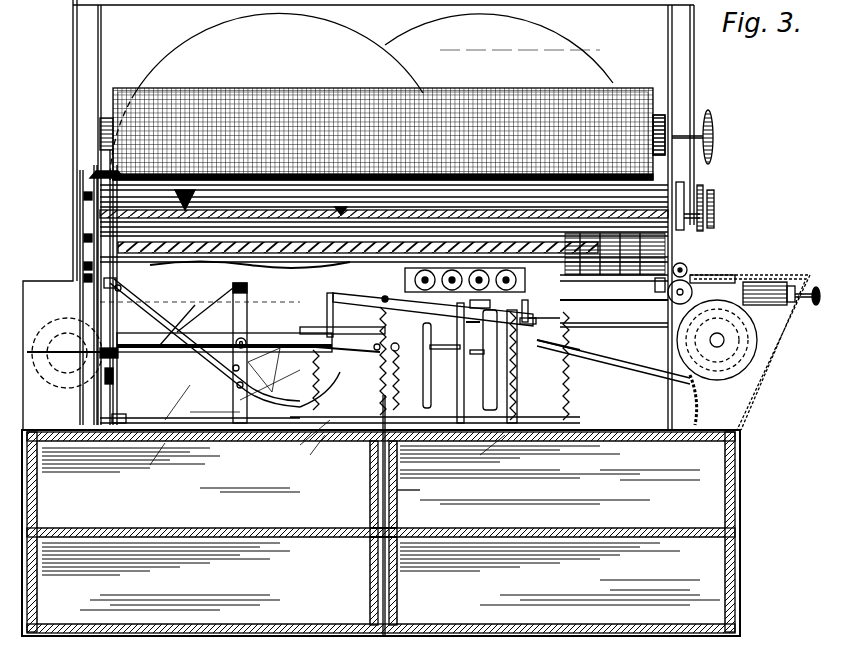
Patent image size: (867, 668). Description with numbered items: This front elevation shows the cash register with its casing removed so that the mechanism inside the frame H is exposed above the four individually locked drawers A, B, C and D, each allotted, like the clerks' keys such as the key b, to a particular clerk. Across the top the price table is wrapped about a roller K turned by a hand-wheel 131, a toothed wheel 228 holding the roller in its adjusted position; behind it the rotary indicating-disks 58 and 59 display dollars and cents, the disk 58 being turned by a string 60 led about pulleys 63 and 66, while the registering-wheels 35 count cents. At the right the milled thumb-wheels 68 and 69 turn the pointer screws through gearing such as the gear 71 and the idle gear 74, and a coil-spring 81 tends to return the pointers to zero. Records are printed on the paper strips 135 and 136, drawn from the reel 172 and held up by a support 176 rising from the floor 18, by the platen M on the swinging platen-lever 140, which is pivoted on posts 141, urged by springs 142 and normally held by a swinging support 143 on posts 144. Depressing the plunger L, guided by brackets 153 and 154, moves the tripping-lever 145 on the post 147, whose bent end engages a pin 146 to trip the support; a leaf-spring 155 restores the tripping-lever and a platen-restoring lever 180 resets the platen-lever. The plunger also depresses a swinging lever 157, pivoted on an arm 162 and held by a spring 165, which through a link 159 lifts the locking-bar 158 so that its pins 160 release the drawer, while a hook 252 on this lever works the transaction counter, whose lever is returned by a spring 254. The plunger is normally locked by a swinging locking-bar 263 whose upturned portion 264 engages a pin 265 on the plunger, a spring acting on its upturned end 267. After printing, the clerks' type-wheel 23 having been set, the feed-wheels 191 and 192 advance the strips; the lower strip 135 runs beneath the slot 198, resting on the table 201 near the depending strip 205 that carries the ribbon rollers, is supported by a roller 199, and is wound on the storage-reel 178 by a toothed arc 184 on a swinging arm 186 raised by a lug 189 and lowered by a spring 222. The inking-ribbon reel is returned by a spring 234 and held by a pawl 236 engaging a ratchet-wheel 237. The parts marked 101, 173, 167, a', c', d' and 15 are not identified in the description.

The rotary indicating-disk 58 is at (173, 48).
The rotary indicating-disk 59 is at (398, 38).
The frame H is at (531, 37).
The roller K is at (285, 88).
The lower feed-wheel 192 is at (704, 295).
The toothed wheel 228 is at (660, 115).
The hand-wheel 131 is at (711, 112).
The registering-wheels 35 is at (384, 245).
The clerks' type-wheel 23 is at (480, 280).
The string 60 is at (614, 280).
The bracket 101 is at (665, 285).
The printing-platen M is at (580, 314).
The idle gear 74 is at (684, 190).
The coil-spring 81 is at (703, 200).
The milled thumb-wheel 69 is at (714, 205).
The gear 71 is at (715, 222).
The milled thumb-wheel 68 is at (686, 268).
The upper feed-wheel 191 is at (745, 275).
The table 201 is at (737, 275).
The slot 198 is at (770, 282).
The depending strip 205 is at (795, 286).
The roller 199 is at (812, 287).
The storage-reel 178 is at (745, 330).
The toothed arc 184 is at (698, 400).
The swinging arm 186 is at (632, 368).
The pawl 236 is at (565, 350).
The spring 222 is at (579, 366).
The lug 189 is at (530, 330).
The plunger L is at (90, 176).
The pulley 66 is at (84, 196).
The pulley 63 is at (84, 237).
The upper bracket 154 is at (84, 265).
The reel 172 is at (84, 277).
The wheel housing 173 is at (34, 318).
The bracket 153 is at (102, 358).
The pin 265 is at (108, 384).
The upturned portion 264 is at (114, 420).
The lever 167 is at (125, 290).
The lower paper strip 135 is at (212, 307).
The upper paper strip 136 is at (190, 330).
The support 176 is at (247, 305).
The swinging lever 157 is at (262, 343).
The platen-restoring lever 180 is at (170, 353).
The leaf-spring 155 is at (232, 390).
The arm 162 is at (258, 370).
The tripping-lever 145 is at (172, 403).
The post 147 is at (212, 412).
The swinging support 143 is at (327, 305).
The hook 252 is at (341, 324).
The platen-lever 140 is at (392, 303).
The springs 142 is at (388, 326).
The pin 146 is at (344, 346).
The link 159 is at (332, 370).
The posts 144 is at (349, 380).
The key lever a' is at (420, 365).
The spring 165 is at (434, 380).
The key or actuator b is at (465, 363).
The key lever d' is at (490, 360).
The posts 141 is at (468, 393).
The spring 234 is at (524, 366).
The bar 15 is at (480, 323).
The key lever c' is at (480, 306).
The second ratchet-wheel 237 is at (541, 311).
The locking pins 160 is at (398, 548).
The floor 18 is at (319, 449).
The spring 254 is at (298, 455).
The locking-bar 263 is at (149, 464).
The upturned end 267 is at (490, 454).
The locking-bar 158 is at (420, 490).
The drawer B is at (203, 484).
The drawer A is at (203, 580).
The drawer C is at (735, 474).
The drawer D is at (735, 585).